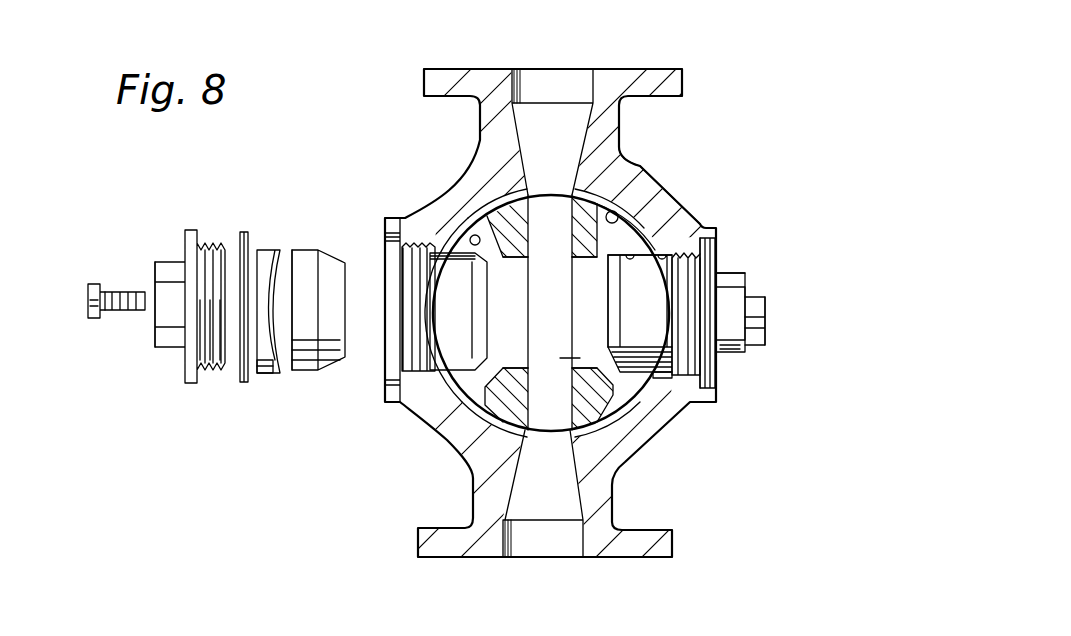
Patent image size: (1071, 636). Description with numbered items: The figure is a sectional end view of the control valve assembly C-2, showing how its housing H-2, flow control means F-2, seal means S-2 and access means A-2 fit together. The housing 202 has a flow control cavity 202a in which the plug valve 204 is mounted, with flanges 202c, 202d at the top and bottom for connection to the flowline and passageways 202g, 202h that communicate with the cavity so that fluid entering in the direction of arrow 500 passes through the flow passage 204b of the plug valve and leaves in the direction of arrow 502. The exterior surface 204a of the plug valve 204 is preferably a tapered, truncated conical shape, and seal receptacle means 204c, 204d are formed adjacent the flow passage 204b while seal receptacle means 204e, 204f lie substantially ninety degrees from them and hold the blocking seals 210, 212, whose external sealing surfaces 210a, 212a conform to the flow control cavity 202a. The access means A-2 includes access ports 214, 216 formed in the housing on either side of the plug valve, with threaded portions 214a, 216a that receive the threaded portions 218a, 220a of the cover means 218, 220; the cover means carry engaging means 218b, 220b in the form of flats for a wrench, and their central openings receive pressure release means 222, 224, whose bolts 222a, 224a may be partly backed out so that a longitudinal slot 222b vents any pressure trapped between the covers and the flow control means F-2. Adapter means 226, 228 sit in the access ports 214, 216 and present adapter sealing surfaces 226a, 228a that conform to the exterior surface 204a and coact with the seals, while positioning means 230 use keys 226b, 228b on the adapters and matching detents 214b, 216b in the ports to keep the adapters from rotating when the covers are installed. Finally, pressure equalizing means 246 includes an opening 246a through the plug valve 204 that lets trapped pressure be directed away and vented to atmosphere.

The housing 202 is at (640, 160).
The flow control cavity 202a is at (597, 205).
The flange 202c is at (672, 70).
The flange 202d is at (672, 532).
The passageway 202g is at (572, 139).
The passageway 202h is at (565, 509).
The plug valve 204 is at (645, 230).
The exterior surface 204a is at (608, 235).
The flow passage 204b is at (570, 296).
The seal receptacle means 204c is at (515, 246).
The seal receptacle means 204d is at (513, 372).
The seal receptacle means 204e is at (462, 250).
The seal receptacle means 204f is at (633, 247).
The blocking seal 210 is at (372, 246).
The external sealing surface 210a is at (300, 232).
The blocking seal 212 is at (652, 292).
The external sealing surface 212a is at (700, 372).
The access port 214 is at (408, 240).
The threaded portion 214a is at (402, 242).
The detent 214b is at (385, 350).
The access port 216 is at (712, 240).
The threaded portion 216a is at (688, 275).
The detent 216b is at (568, 360).
The cover means 218 is at (185, 382).
The threaded portion 218a is at (212, 375).
The engaging means 218b is at (158, 337).
The cover means 220 is at (750, 348).
The threaded portion 220a is at (718, 282).
The engaging means 220b is at (728, 322).
The pressure release means 222 is at (85, 283).
The bolt 222a is at (85, 314).
The longitudinal slot 222b is at (128, 292).
The pressure release means 224 is at (769, 295).
The bolt 224a is at (753, 307).
The adapter means 226 is at (272, 232).
The adapter sealing surface 226a is at (283, 360).
The key 226b is at (262, 378).
The adapter means 228 is at (672, 350).
The adapter sealing surface 228a is at (662, 328).
The key 228b is at (685, 402).
The positioning means 230 is at (250, 382).
The pressure equalizing means 246 is at (488, 237).
The opening 246a is at (447, 240).
The arrow 500 is at (553, 48).
The arrow 502 is at (543, 612).
The access means A-2 is at (187, 226).
The control valve assembly C-2 is at (318, 97).
The housing H-2 is at (447, 168).
The flow control means F-2 is at (453, 390).
The seal means S-2 is at (330, 375).